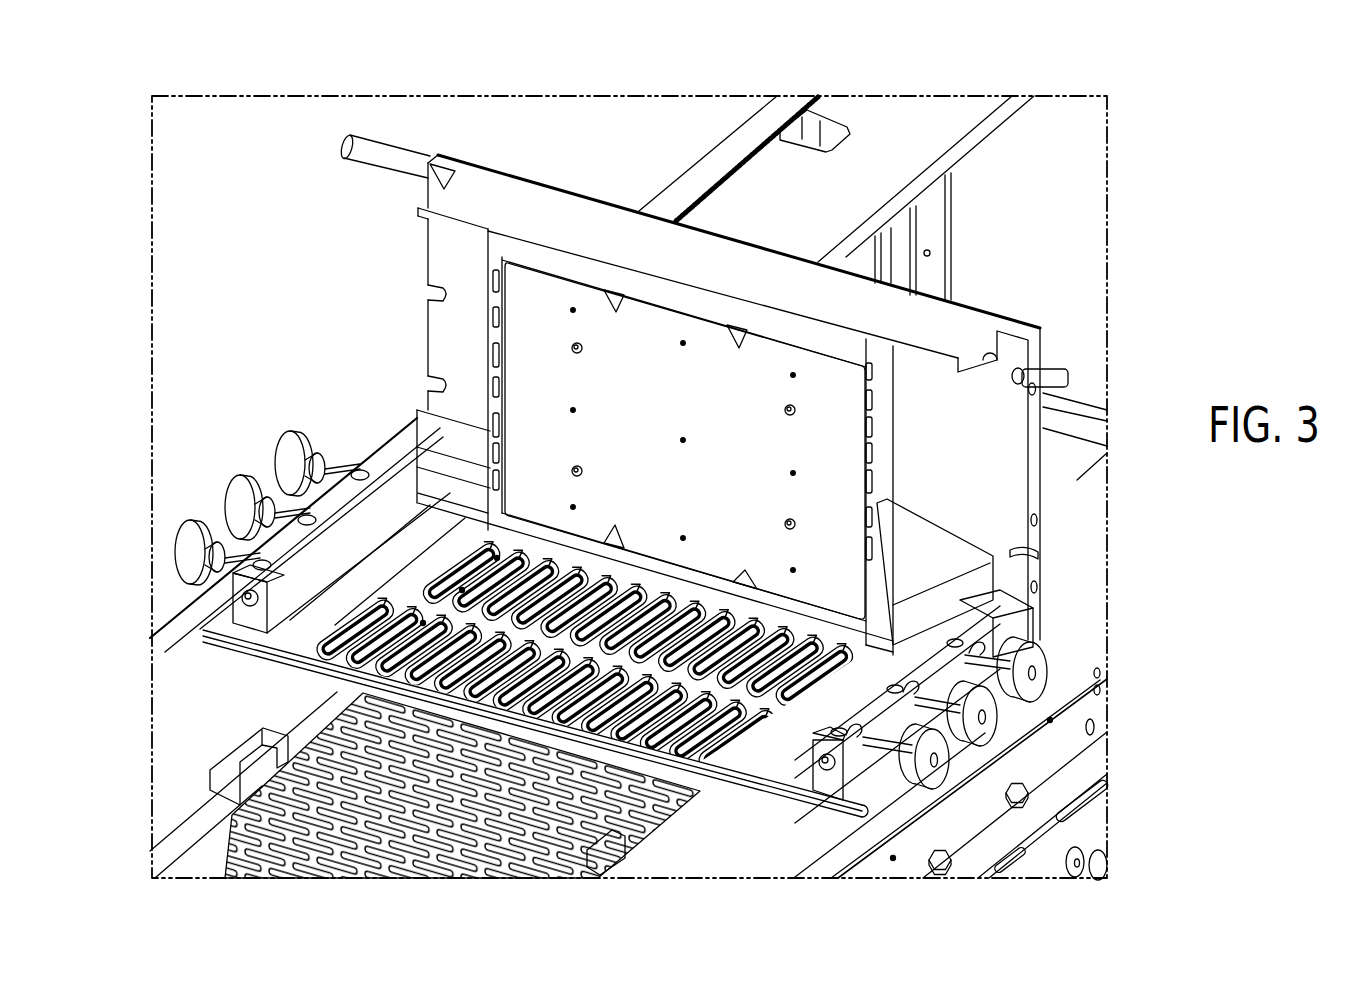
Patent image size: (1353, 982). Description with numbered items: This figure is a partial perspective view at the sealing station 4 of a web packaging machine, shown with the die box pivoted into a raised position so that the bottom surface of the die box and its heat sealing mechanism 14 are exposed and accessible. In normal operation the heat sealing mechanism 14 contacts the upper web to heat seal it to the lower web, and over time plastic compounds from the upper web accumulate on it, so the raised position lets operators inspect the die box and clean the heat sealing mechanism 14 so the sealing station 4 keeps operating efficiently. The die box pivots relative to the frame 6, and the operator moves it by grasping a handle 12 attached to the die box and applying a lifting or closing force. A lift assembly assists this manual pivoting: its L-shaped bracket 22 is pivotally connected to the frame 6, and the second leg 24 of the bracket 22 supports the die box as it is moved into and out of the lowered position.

The sealing station 4 is at (233, 79).
The frame 6 is at (1073, 608).
The handle 12 is at (403, 166).
The heat sealing mechanism 14 is at (547, 332).
The bracket 22 is at (948, 575).
The second leg 24 is at (955, 590).